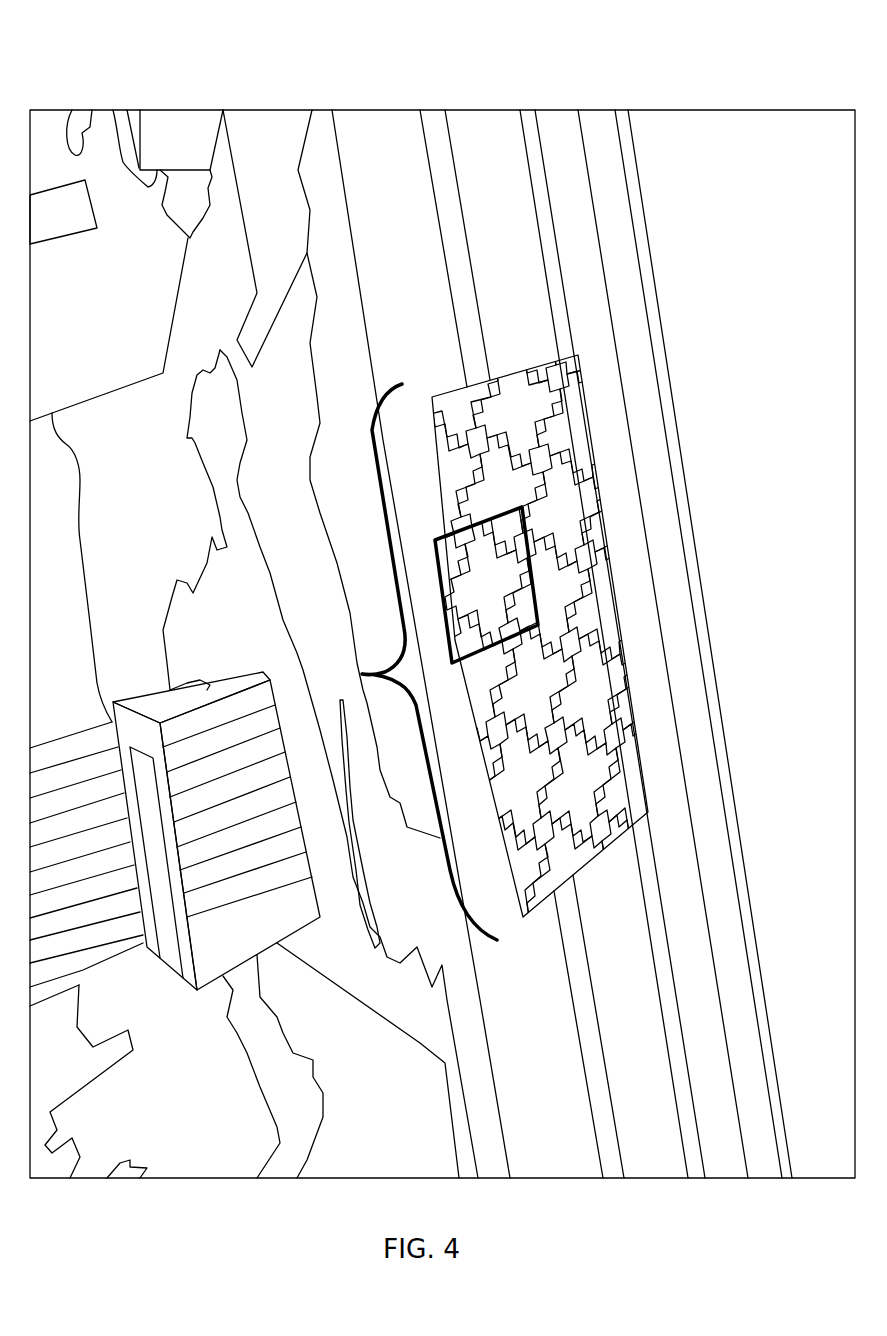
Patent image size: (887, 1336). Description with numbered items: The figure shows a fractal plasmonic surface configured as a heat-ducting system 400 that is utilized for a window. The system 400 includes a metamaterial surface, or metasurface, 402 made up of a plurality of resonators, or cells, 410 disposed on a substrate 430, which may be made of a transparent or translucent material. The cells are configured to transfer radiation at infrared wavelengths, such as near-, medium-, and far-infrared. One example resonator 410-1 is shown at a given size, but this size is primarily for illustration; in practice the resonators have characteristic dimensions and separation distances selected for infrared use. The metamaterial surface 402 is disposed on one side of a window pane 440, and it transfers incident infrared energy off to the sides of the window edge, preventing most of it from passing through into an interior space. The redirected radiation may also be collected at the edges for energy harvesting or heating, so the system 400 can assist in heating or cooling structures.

The system 400 is at (134, 66).
The metamaterial surface 402 is at (603, 855).
The resonators 410 is at (496, 660).
The resonator 410-1 is at (535, 562).
The substrate 430 is at (517, 408).
The window pane 440 is at (230, 942).